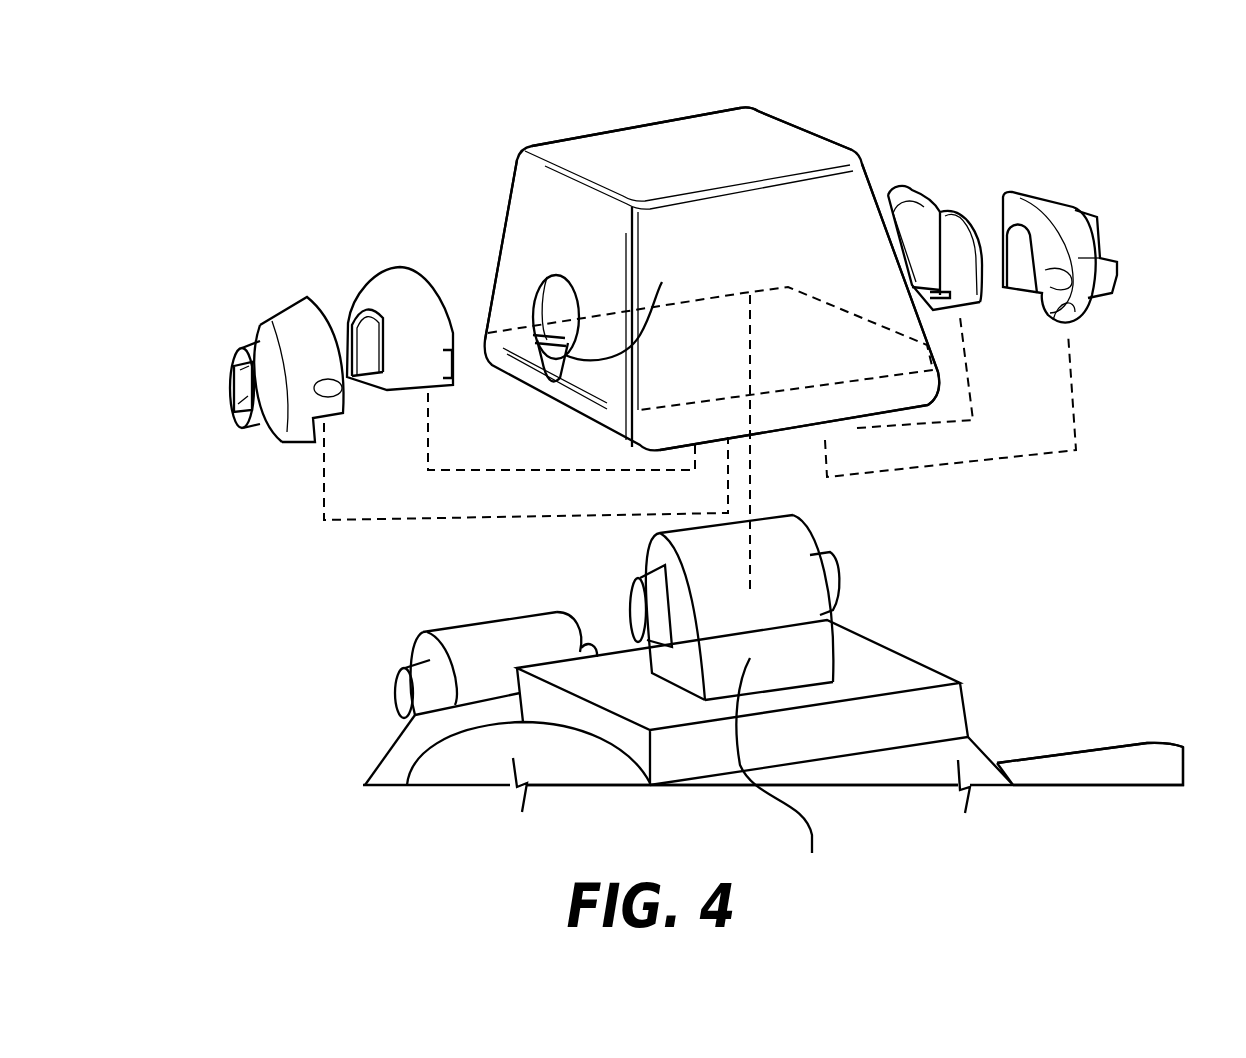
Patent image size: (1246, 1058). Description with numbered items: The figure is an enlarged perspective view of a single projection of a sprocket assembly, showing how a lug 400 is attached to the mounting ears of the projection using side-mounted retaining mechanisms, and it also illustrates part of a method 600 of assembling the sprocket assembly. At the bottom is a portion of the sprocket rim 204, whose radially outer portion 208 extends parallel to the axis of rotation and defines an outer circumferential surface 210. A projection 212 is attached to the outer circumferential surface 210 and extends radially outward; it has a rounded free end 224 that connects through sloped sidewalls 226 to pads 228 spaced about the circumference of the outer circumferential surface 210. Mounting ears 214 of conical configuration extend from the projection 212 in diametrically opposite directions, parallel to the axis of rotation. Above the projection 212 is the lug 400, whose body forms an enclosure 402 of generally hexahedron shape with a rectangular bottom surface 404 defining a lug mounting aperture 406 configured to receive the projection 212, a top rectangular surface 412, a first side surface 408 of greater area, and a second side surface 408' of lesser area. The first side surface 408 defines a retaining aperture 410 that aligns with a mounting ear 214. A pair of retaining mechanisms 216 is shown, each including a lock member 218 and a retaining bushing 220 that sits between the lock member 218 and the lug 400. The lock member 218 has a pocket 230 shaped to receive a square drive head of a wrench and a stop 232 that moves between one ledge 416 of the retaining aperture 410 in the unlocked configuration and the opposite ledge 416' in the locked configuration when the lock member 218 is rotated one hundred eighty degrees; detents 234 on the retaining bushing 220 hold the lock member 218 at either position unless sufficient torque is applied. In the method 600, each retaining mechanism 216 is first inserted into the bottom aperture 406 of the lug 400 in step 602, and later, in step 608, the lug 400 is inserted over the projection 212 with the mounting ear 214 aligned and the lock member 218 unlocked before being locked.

The lug 400 is at (712, 100).
The enclosure 402 is at (767, 133).
The bottom surface 404 is at (893, 408).
The lug mounting aperture 406 is at (912, 375).
The first side surface 408 is at (476, 225).
The second side surface 408' is at (880, 214).
The retaining aperture 410 is at (558, 275).
The top rectangular surface 412 is at (658, 137).
The ledge 416 is at (505, 290).
The opposite ledge 416' is at (645, 309).
The step of inserting the lug over the projection 608 is at (754, 456).
The retaining mechanism 216 is at (291, 270).
The lock member 218 is at (258, 350).
The retaining bushing 220 is at (377, 293).
The pocket 230 is at (237, 384).
The stop 232 is at (235, 382).
The detents 234 is at (447, 370).
The method of assembling a sprocket assembly 600 is at (1092, 490).
The step of inserting the retaining mechanism into the bottom aperture 602 is at (323, 495).
The sprocket rim 204 is at (1090, 724).
The radially outer portion 208 is at (1160, 757).
The outer circumferential surface 210 is at (908, 763).
The projection 212 is at (814, 647).
The mounting ear 214 is at (417, 685).
The rounded free end 224 is at (481, 630).
The sloped sidewalls 226 is at (605, 542).
The pads 228 is at (393, 763).